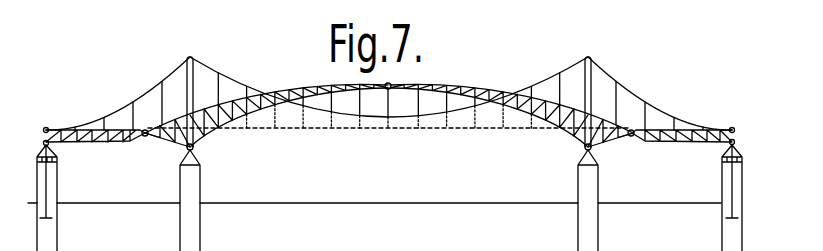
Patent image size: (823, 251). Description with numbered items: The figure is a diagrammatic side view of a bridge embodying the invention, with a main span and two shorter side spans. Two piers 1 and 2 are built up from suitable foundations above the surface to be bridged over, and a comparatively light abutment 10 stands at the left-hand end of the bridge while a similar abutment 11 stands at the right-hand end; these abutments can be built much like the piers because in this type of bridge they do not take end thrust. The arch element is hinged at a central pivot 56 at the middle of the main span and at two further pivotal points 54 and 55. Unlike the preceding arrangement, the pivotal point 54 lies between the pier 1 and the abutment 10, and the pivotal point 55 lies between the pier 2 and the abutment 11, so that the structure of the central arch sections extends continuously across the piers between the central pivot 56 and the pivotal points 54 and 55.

The abutment 10 is at (53, 191).
The abutment 11 is at (738, 186).
The pier 1 is at (193, 189).
The pier 2 is at (590, 199).
The pivotal point 54 is at (145, 136).
The pivotal point 55 is at (632, 136).
The central pivot 56 is at (390, 84).